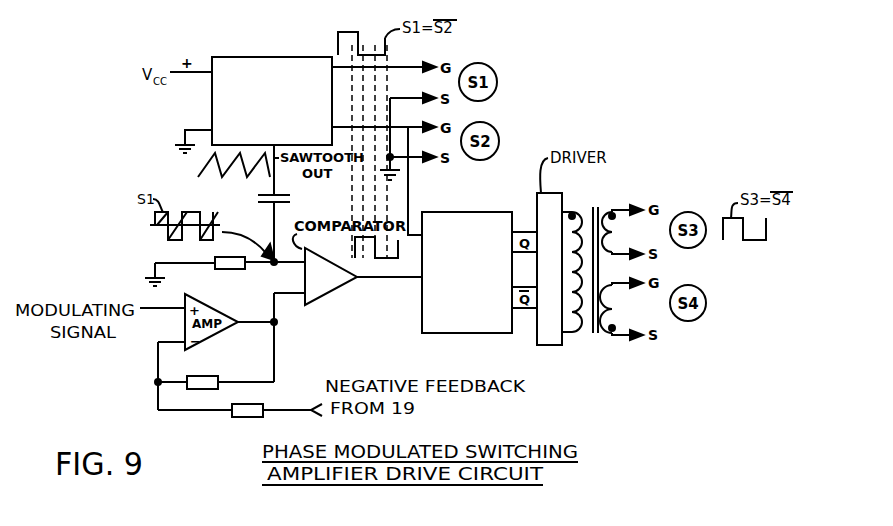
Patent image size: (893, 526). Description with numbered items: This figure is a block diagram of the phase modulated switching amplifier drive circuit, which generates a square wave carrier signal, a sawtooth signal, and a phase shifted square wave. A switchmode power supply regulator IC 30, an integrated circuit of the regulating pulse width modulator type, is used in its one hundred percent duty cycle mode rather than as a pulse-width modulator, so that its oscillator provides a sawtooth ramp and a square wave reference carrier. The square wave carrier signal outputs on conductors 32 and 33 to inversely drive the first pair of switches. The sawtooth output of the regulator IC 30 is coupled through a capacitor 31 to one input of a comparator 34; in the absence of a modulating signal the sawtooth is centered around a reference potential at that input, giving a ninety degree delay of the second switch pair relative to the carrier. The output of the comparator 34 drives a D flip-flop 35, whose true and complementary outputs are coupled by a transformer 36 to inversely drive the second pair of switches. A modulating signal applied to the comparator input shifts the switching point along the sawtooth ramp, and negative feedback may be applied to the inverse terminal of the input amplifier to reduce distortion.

The switchmode power supply regulator IC 30 is at (252, 57).
The capacitor 31 is at (290, 207).
The conductor 32 is at (338, 70).
The conductor 33 is at (340, 116).
The comparator 34 is at (322, 297).
The D flip-flop 35 is at (458, 212).
The transformer 36 is at (585, 200).